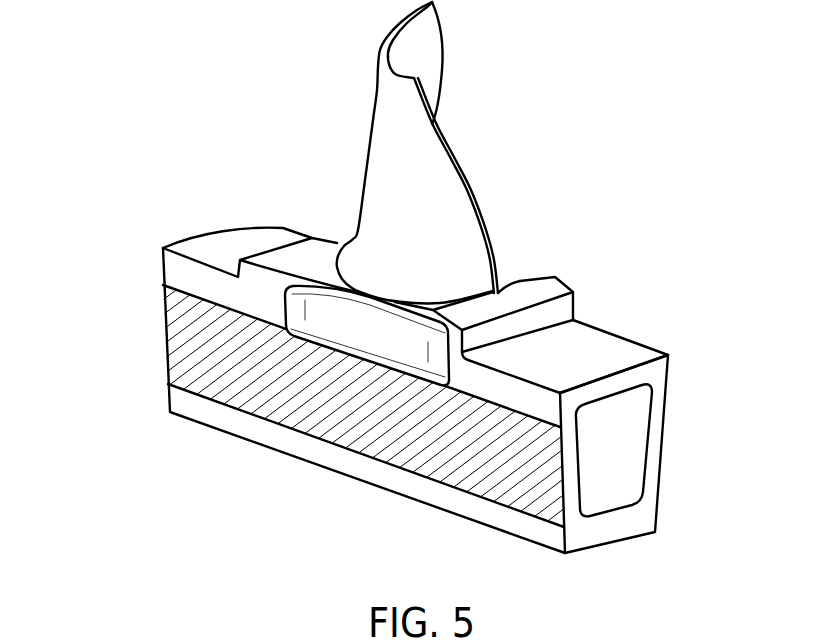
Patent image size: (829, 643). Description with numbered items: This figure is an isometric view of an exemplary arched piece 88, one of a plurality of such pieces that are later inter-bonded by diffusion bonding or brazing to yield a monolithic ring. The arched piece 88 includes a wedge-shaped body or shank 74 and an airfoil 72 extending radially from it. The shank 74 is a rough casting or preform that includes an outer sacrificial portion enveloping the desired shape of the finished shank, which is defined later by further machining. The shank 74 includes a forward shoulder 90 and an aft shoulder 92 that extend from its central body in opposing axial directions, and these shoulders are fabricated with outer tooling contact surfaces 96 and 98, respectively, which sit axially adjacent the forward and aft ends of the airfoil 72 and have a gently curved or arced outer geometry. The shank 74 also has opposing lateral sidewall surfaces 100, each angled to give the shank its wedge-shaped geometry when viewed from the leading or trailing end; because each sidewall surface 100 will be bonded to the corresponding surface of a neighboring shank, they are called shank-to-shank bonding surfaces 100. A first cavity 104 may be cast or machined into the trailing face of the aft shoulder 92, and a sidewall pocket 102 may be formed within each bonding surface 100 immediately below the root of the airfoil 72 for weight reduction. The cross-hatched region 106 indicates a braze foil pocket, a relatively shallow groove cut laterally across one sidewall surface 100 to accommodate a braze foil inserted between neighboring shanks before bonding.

The airfoil 72 is at (376, 113).
The shank 74 is at (566, 542).
The arched piece 88 is at (196, 177).
The forward shoulder 90 is at (170, 397).
The aft shoulder 92 is at (663, 388).
The outer tooling contact surface 96 is at (277, 236).
The outer tooling contact surface 98 is at (607, 343).
The sidewall surface 100 is at (568, 574).
The sidewall pocket 102 is at (383, 338).
The first cavity 104 is at (637, 443).
The cross-hatched region 106 is at (156, 287).